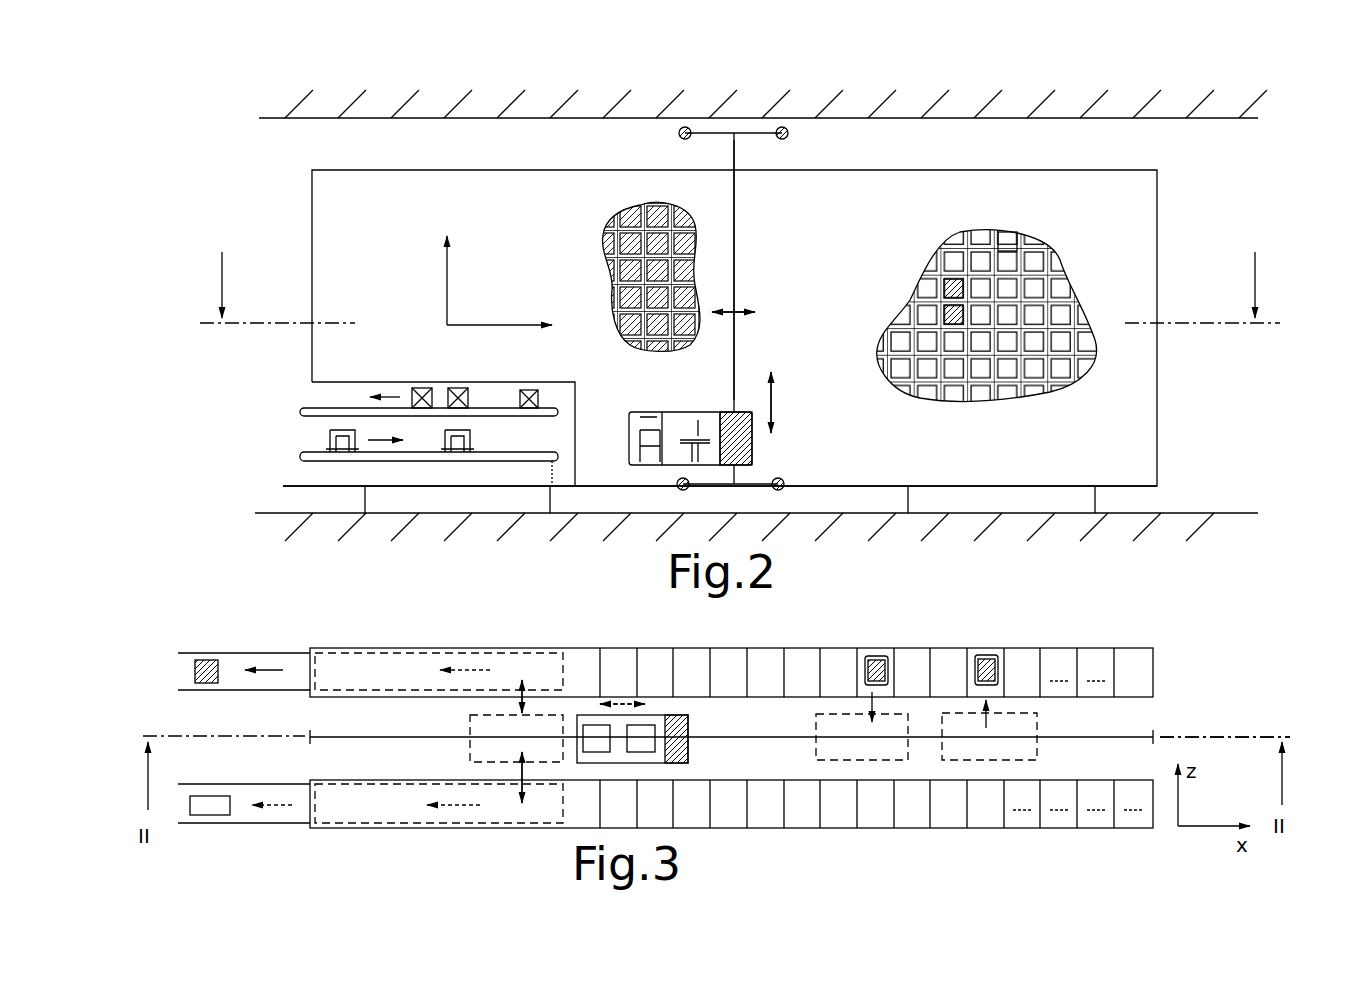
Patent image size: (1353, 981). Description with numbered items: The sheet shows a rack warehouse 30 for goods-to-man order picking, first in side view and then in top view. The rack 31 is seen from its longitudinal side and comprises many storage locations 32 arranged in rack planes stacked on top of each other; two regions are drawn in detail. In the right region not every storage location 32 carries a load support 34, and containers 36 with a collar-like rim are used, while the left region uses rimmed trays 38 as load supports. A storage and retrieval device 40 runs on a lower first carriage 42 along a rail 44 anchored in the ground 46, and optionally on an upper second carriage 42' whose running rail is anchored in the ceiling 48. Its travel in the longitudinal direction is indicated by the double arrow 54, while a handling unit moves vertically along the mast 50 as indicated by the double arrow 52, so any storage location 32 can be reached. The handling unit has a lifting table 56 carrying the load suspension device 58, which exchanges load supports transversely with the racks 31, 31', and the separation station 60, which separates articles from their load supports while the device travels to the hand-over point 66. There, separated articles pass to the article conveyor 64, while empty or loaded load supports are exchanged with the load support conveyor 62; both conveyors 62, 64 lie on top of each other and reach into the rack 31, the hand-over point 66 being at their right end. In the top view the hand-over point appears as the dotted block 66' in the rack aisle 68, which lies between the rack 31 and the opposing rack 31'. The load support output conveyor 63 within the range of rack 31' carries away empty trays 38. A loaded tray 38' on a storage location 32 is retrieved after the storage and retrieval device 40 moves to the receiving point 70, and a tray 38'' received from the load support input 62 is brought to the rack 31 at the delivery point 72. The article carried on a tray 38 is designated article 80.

In FIG. 2, the rack warehouse 30 is at (266, 183).
In FIG. 2, the rack 31 is at (1203, 214).
In FIG. 3, the rack 31 is at (737, 638).
In FIG. 3, the another rack 31' is at (731, 828).
In FIG. 2, the storage location 32 is at (905, 387).
In FIG. 3, the storage location 32 is at (1079, 735).
In FIG. 2, the load support 34 is at (1010, 245).
In FIG. 2, the container 36 is at (1052, 380).
In FIG. 2, the tray 38 is at (614, 276).
In FIG. 3, the tray 38 is at (210, 836).
In FIG. 3, the loaded tray 38' is at (911, 652).
In FIG. 3, the tray to be delivered 38'' is at (1025, 654).
In FIG. 2, the storage and retrieval device 40 is at (748, 365).
In FIG. 3, the storage and retrieval device 40 is at (675, 712).
In FIG. 2, the first carriage 42 is at (797, 466).
In FIG. 2, the second carriage 42' is at (757, 88).
In FIG. 2, the rail 44 is at (905, 487).
In FIG. 3, the rail 44 is at (735, 738).
In FIG. 2, the ground 46 is at (1215, 513).
In FIG. 2, the ceiling 48 is at (1108, 118).
In FIG. 2, the mast 50 is at (737, 238).
In FIG. 2, the double arrow 52 is at (776, 403).
In FIG. 2, the double arrow 54 is at (745, 312).
In FIG. 2, the lifting table 56 is at (632, 462).
In FIG. 2, the load suspension device 58 is at (700, 405).
In FIG. 2, the separation station 60 is at (650, 405).
In FIG. 2, the load support conveyor 62 is at (302, 450).
In FIG. 3, the load support output conveyor 63 is at (280, 824).
In FIG. 2, the article conveyor 64 is at (302, 406).
In FIG. 3, the article conveyor 64 is at (240, 651).
In FIG. 2, the hand-over point 66 is at (502, 506).
In FIG. 3, the block 66' is at (469, 741).
In FIG. 3, the rack aisle 68 is at (1140, 712).
In FIG. 3, the receiving point 70 is at (852, 762).
In FIG. 3, the delivery point 72 is at (972, 762).
In FIG. 3, the article 80 is at (200, 658).